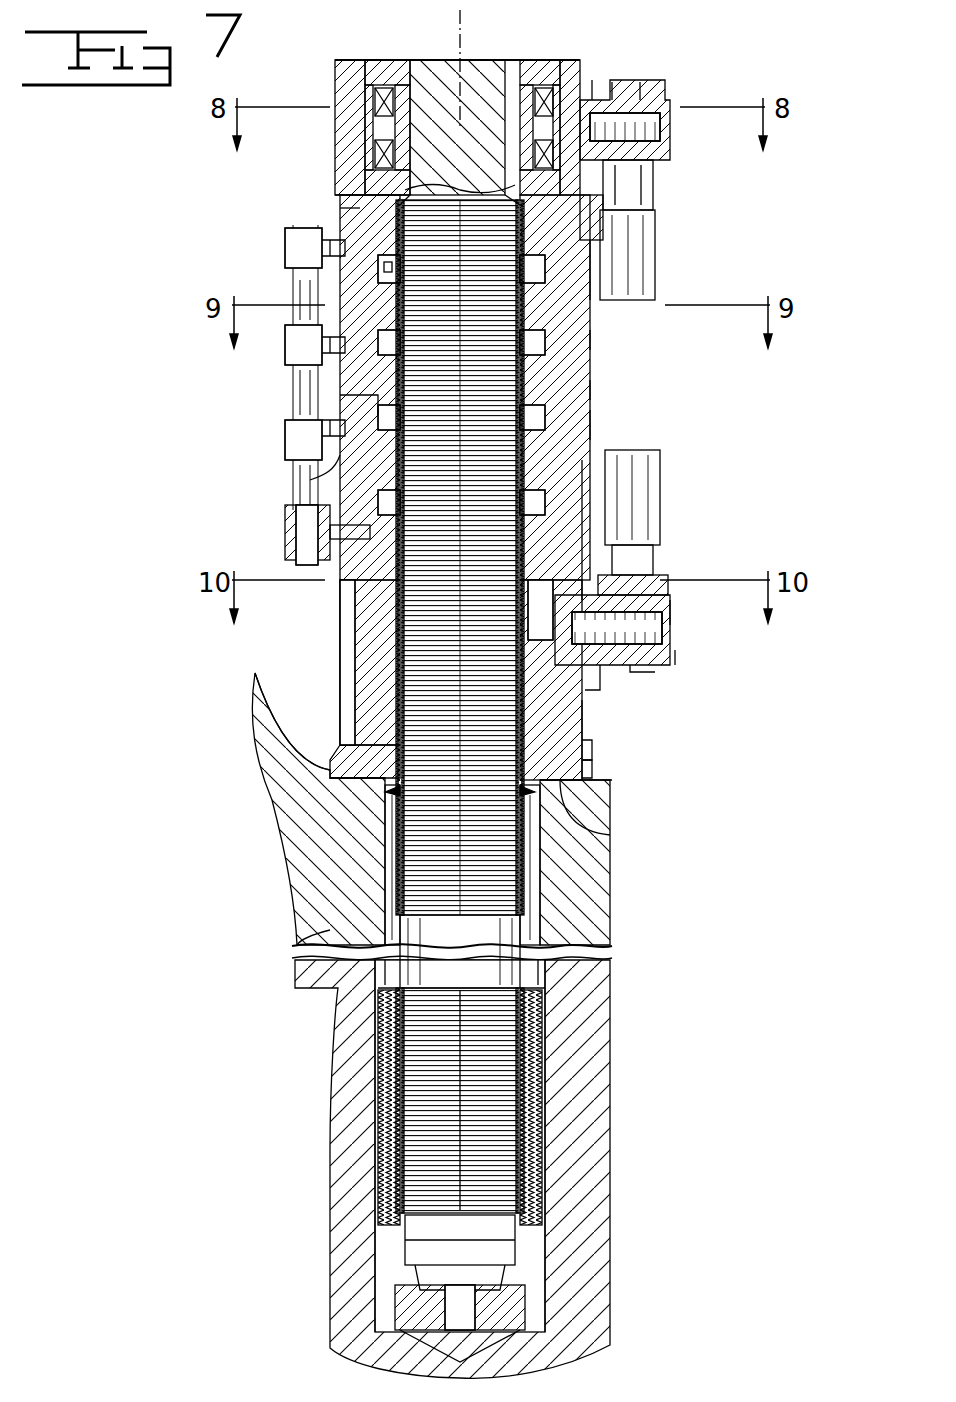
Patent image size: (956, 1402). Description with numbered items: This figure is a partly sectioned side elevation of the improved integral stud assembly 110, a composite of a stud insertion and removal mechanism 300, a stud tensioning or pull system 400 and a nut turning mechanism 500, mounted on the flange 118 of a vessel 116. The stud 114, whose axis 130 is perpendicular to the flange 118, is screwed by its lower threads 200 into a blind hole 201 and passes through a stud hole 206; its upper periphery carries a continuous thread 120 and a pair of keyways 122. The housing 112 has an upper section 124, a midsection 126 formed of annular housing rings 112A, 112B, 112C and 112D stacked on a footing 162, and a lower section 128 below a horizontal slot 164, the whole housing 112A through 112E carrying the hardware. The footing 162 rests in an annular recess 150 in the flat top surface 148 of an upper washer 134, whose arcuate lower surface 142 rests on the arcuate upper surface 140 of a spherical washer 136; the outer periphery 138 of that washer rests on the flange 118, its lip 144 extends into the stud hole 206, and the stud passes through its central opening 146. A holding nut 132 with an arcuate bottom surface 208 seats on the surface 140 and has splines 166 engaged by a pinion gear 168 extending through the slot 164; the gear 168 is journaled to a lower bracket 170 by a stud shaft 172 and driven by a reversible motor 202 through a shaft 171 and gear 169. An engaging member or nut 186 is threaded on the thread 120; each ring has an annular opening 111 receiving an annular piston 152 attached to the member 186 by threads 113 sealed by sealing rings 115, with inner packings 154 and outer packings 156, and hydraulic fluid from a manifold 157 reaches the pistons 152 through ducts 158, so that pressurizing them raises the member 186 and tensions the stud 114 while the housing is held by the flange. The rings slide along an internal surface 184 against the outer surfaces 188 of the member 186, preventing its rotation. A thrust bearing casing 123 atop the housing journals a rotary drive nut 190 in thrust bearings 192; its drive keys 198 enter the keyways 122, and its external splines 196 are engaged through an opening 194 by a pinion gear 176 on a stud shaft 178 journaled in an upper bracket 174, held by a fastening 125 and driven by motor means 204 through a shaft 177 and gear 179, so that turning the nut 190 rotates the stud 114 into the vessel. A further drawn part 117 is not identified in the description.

The integral stud assembly 110 is at (740, 60).
The annular opening 111 is at (310, 268).
The housing 112 is at (340, 222).
The annular housing ring 112A is at (595, 500).
The annular housing ring 112B is at (592, 420).
The annular housing ring 112C is at (592, 345).
The annular housing ring 112D is at (592, 300).
The housing section 112E is at (360, 617).
The threads 113 is at (400, 333).
The stud 114 is at (460, 557).
The sealing rings 115 is at (400, 362).
The vessel 116 is at (248, 706).
The rod 117 is at (340, 300).
The flange 118 is at (345, 800).
The thread 120 is at (400, 686).
The keyways 122 is at (402, 388).
The thrust bearing casing 123 is at (345, 105).
The upper section 124 is at (342, 197).
The fastening 125 is at (342, 210).
The midsection 126 is at (592, 385).
The lower section 128 is at (675, 640).
The axis 130 is at (455, 58).
The holding nut 132 is at (375, 665).
The upper washer 134 is at (592, 722).
The spherical washer 136 is at (596, 778).
The outer periphery 138 is at (600, 812).
The arcuate upper surface 140 is at (590, 748).
The arcuate lower surface 142 is at (595, 762).
The lip 144 is at (530, 808).
The central opening 146 is at (390, 808).
The top surface 148 is at (465, 694).
The annular recess 150 is at (400, 710).
The annular piston 152 is at (385, 510).
The inner packings 154 is at (325, 452).
The outer packings 156 is at (355, 408).
The manifold 157 is at (295, 507).
The ducts 158 is at (340, 224).
The footing 162 is at (465, 739).
The horizontal slot 164 is at (608, 582).
The splines 166 is at (400, 606).
The pinion gear 168 is at (465, 625).
The gear 169 is at (642, 665).
The lower bracket 170 is at (678, 650).
The shaft 171 is at (672, 600).
The stud shaft 172 is at (600, 668).
The upper bracket 174 is at (668, 142).
The pinion gear 176 is at (608, 100).
The shaft 177 is at (640, 200).
The stud shaft 178 is at (592, 100).
The gear 179 is at (630, 110).
The internal surface 184 is at (575, 372).
The engaging member 186 is at (400, 295).
The surfaces 188 is at (340, 380).
The rotary drive nut 190 is at (385, 124).
The thrust bearing 192 is at (542, 112).
The opening 194 is at (570, 100).
The external splines 196 is at (356, 88).
The drive keys 198 is at (405, 185).
The lower threads 200 is at (475, 1140).
The blind hole 201 is at (552, 1098).
The reversible motor 202 is at (650, 455).
The motor means 204 is at (650, 255).
The stud hole 206 is at (390, 880).
The arcuate bottom surface 208 is at (460, 791).
The stud insertion and removal mechanism 300 is at (680, 170).
The stud tensioning system 400 is at (270, 420).
The nut turning mechanism 500 is at (680, 530).